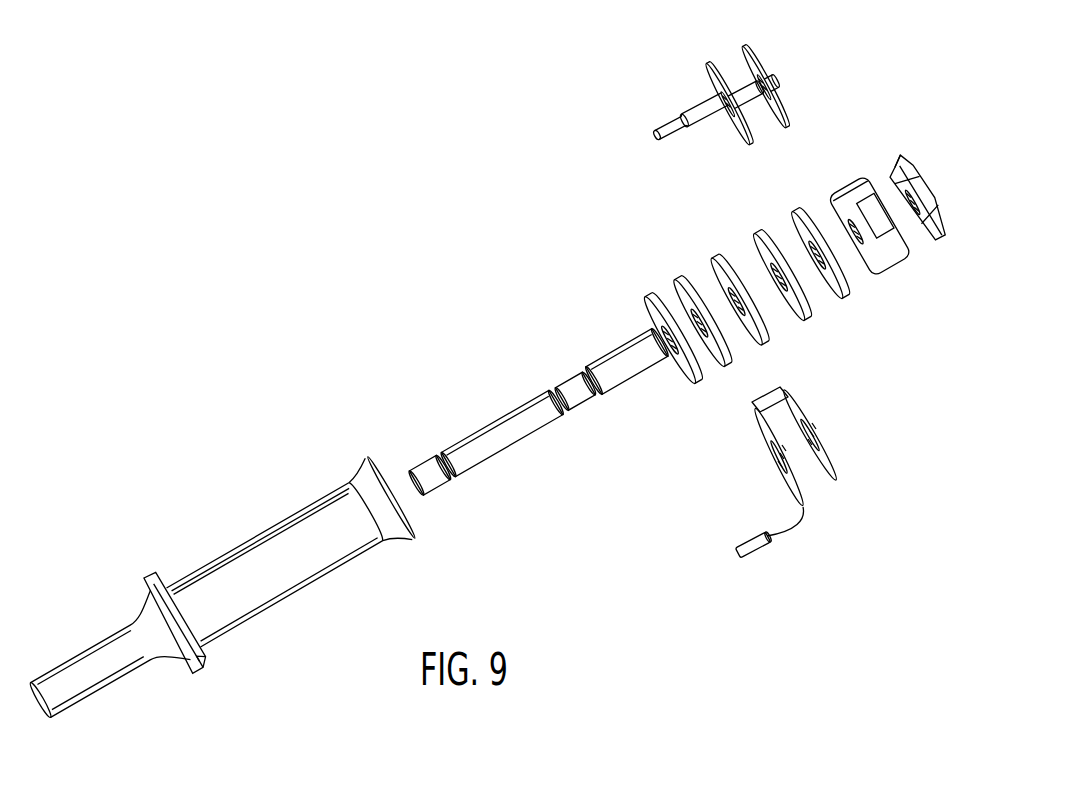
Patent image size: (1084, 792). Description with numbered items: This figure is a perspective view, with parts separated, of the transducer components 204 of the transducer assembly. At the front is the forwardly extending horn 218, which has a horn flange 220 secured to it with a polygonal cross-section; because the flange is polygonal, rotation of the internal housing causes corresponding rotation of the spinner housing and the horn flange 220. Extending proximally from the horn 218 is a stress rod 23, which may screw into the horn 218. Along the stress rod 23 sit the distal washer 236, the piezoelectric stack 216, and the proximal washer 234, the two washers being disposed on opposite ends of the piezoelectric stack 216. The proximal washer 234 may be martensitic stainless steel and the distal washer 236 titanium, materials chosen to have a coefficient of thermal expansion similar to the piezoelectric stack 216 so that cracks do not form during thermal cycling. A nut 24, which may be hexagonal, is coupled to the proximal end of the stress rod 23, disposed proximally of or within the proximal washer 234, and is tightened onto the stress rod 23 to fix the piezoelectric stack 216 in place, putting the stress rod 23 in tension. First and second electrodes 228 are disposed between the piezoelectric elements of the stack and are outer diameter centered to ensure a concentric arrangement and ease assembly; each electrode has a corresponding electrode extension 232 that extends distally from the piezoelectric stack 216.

The transducer components 204 is at (437, 212).
The horn 218 is at (335, 513).
The horn flange 220 is at (163, 577).
The stress rod 23 is at (533, 420).
The distal washer 236 is at (647, 295).
The piezoelectric stack 216 is at (708, 257).
The proximal washer 234 is at (893, 275).
The nut 24 is at (893, 168).
The electrodes 228 is at (757, 58).
The electrode extensions 232 is at (705, 117).